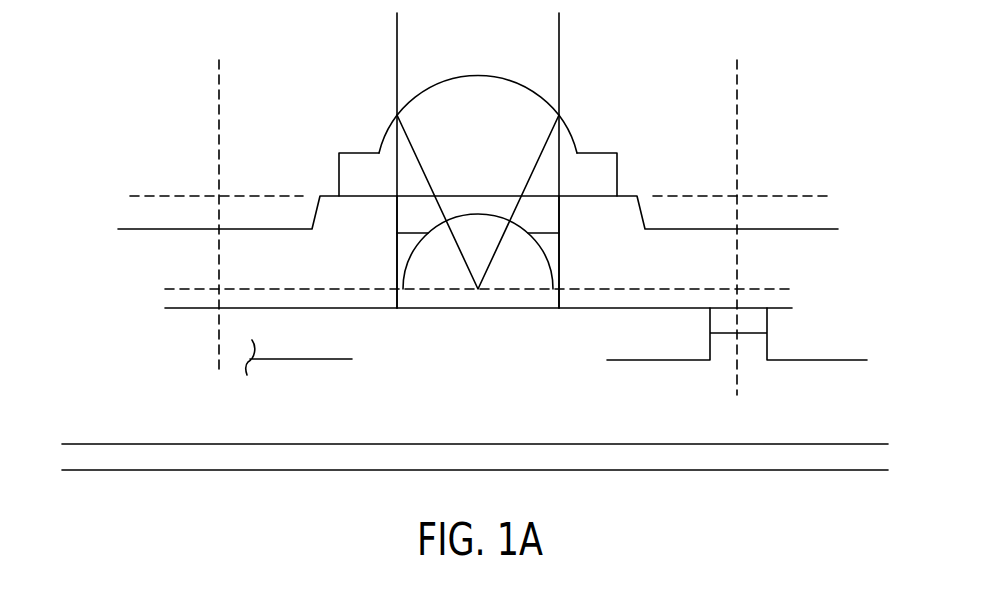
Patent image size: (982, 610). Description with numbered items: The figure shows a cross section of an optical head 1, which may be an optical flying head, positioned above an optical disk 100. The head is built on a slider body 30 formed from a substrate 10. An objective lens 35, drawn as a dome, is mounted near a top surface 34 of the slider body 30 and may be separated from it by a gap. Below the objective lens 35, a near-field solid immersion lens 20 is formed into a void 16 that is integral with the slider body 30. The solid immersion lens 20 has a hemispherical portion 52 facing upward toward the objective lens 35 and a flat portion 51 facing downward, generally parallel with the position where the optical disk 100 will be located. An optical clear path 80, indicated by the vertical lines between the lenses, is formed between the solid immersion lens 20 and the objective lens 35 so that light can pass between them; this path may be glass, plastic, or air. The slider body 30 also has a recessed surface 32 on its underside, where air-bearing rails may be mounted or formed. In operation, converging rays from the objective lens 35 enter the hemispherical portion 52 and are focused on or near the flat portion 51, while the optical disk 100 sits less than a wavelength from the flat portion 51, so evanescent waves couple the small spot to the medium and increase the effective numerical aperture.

The optical head 1 is at (163, 63).
The substrate 10 is at (175, 266).
The void 16 is at (550, 222).
The solid immersion lens 20 is at (527, 265).
The slider body 30 is at (310, 289).
The recessed surface 32 is at (643, 312).
The top surface 34 is at (623, 196).
The objective lens 35 is at (593, 153).
The flat portion 51 is at (477, 310).
The hemispherical portion 52 is at (418, 197).
The optical clear path 80 is at (403, 52).
The optical disk 100 is at (107, 458).